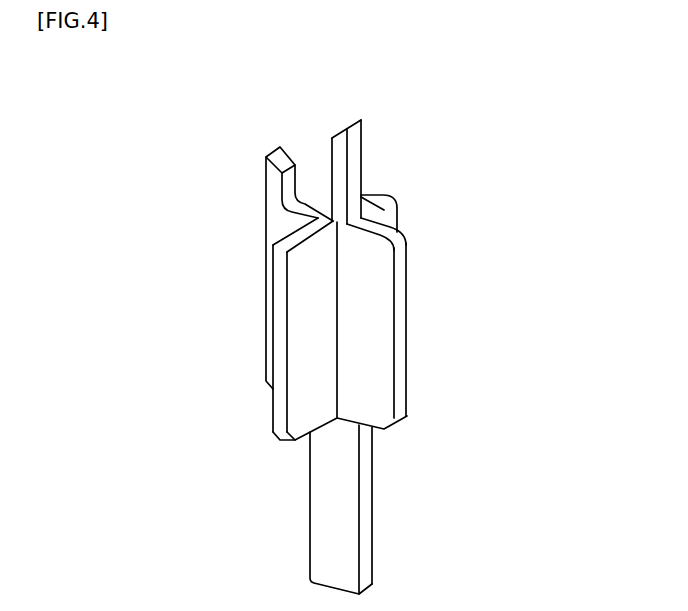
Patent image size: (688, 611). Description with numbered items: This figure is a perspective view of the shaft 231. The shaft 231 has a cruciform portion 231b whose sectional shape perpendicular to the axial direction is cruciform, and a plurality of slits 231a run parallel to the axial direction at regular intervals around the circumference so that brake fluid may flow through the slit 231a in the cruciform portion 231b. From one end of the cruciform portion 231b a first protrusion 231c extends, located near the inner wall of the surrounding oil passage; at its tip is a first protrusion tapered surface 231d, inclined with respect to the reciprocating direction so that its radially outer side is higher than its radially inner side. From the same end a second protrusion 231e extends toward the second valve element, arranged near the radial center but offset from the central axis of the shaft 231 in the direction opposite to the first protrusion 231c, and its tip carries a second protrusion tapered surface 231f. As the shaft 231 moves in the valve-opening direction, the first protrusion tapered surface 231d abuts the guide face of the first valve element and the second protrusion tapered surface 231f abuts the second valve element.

The shaft 231 is at (226, 233).
The slit 231a is at (337, 357).
The cruciform portion 231b is at (398, 282).
The first protrusion 231c is at (272, 185).
The first protrusion tapered surface 231d is at (273, 152).
The second protrusion 231e is at (350, 178).
The second protrusion tapered surface 231f is at (333, 133).